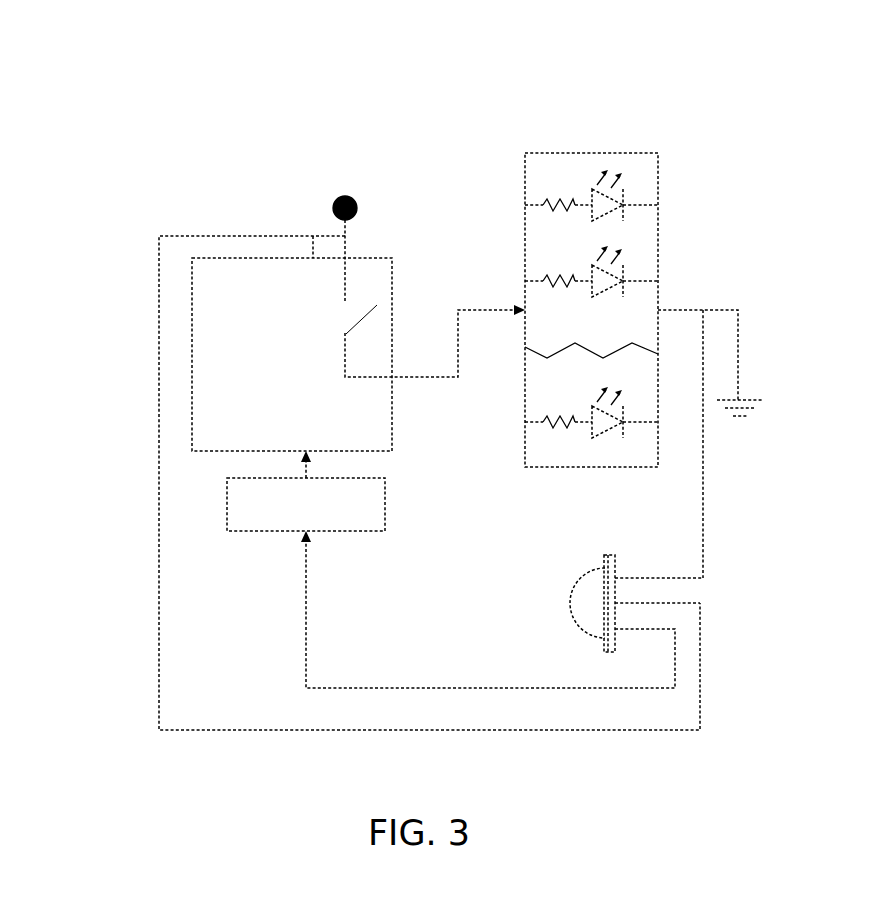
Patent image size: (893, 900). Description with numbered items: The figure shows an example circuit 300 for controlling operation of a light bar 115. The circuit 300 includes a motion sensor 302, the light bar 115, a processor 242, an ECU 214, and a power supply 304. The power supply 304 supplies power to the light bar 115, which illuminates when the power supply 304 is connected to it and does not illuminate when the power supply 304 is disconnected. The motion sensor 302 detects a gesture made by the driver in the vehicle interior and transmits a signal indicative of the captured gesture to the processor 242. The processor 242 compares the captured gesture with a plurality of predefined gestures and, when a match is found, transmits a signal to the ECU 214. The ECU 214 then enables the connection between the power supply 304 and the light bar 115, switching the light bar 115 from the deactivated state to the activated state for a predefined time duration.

The circuit 300 is at (173, 101).
The ECU 214 is at (192, 367).
The power supply 304 is at (345, 196).
The light bar 115 is at (590, 153).
The processor 242 is at (385, 503).
The motion sensor 302 is at (570, 602).